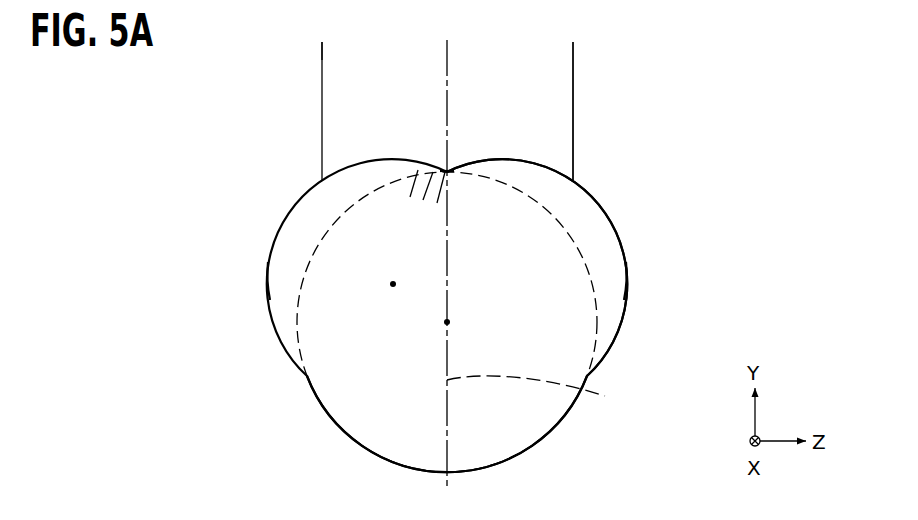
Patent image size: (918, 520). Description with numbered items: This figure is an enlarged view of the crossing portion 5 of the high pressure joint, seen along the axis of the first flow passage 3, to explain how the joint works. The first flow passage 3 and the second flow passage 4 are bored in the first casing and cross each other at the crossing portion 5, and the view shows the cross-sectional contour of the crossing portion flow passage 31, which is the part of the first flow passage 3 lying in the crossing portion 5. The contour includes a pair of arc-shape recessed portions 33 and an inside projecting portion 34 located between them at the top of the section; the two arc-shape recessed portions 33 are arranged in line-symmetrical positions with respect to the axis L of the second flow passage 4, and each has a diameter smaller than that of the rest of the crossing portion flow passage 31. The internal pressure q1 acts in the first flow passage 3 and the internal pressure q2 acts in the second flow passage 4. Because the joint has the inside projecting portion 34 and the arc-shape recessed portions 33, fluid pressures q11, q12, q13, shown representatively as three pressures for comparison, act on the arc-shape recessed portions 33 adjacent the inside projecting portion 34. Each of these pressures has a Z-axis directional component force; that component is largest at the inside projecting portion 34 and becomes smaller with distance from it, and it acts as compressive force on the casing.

The first flow passage 3 is at (562, 420).
The crossing portion flow passage 31 is at (447, 424).
The arc-shape recessed portion 33 is at (273, 251).
The inside projecting portion 34 is at (453, 176).
The second flow passage 4 is at (574, 128).
The crossing portion 5 is at (660, 199).
The axis of second flow passage L is at (600, 396).
The internal pressure in first flow passage q1 is at (297, 322).
The internal pressure in second flow passage q2 is at (322, 53).
The fluid pressure q11 is at (437, 204).
The fluid pressure q12 is at (424, 203).
The fluid pressure q13 is at (412, 196).